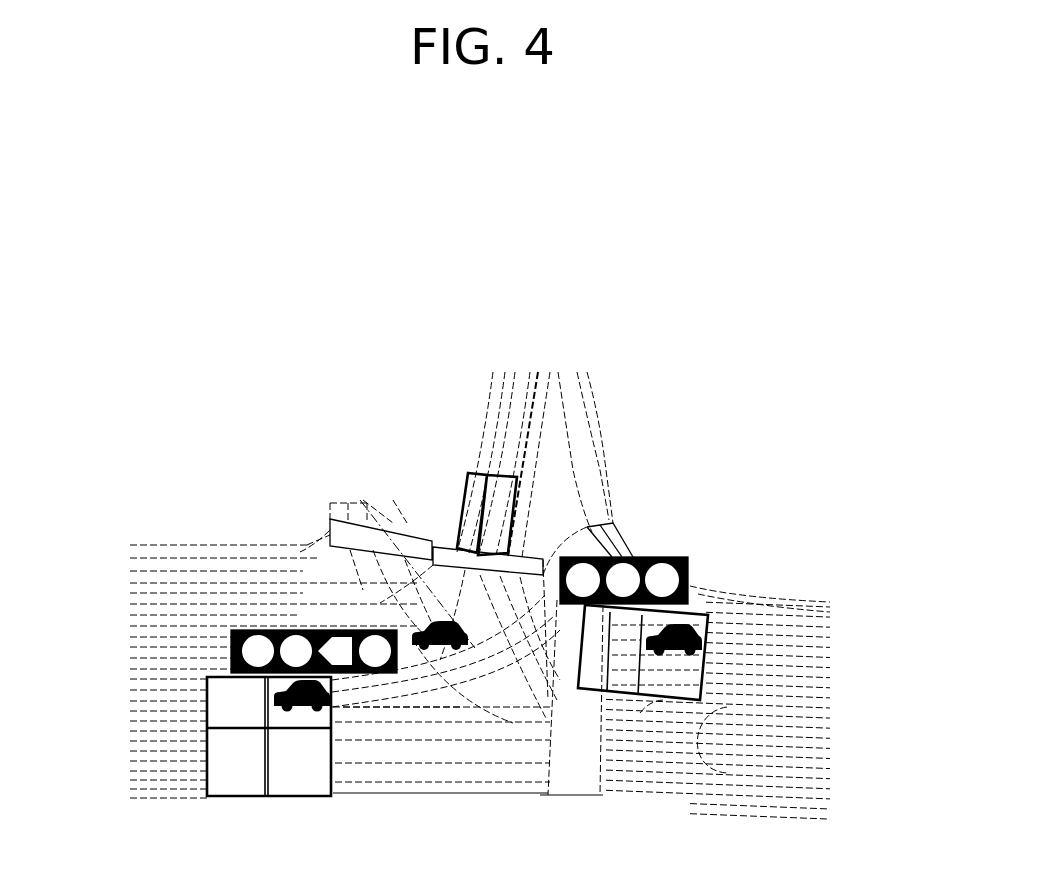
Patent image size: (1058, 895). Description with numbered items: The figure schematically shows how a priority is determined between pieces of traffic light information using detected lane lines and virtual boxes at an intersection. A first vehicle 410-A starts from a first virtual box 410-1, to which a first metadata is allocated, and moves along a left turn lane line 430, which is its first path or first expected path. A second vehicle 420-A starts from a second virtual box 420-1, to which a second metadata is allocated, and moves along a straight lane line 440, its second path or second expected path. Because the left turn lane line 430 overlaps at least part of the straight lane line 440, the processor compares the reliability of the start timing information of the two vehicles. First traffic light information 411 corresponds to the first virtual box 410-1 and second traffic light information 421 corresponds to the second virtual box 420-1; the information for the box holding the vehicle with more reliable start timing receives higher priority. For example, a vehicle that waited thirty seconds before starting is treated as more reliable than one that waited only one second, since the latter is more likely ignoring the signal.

The first traffic light information 411 is at (314, 630).
The first virtual box 410-1 is at (208, 700).
The first vehicle 410-A is at (302, 707).
The left turn lane line 430 is at (337, 707).
The straight lane line 440 is at (587, 527).
The second traffic light information 421 is at (613, 557).
The second virtual box 420-1 is at (695, 613).
The second vehicle 420-A is at (673, 652).